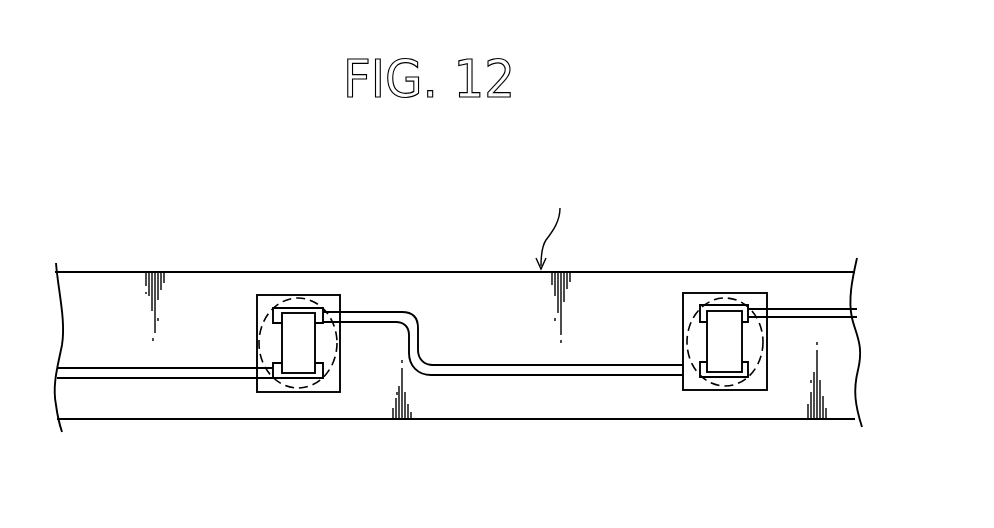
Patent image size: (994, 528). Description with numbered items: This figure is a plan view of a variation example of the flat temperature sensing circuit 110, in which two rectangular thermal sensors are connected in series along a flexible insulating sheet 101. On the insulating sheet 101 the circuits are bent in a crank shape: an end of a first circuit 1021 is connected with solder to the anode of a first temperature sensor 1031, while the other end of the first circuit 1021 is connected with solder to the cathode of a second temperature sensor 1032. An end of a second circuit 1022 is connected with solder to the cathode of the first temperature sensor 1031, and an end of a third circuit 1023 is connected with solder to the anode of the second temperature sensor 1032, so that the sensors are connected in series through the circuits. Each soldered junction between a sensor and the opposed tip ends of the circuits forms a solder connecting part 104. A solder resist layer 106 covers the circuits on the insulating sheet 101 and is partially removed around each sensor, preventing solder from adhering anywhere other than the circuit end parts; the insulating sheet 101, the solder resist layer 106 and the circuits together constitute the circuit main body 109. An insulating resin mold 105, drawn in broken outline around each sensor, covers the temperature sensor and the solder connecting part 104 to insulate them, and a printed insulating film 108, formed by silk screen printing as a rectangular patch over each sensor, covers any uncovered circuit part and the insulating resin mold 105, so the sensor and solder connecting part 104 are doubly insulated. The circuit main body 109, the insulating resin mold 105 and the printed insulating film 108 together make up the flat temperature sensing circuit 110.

The flat temperature sensing circuit 110 is at (677, 148).
The insulating sheet 101 is at (587, 271).
The solder resist layer 106 is at (493, 287).
The circuit main body 109 is at (557, 224).
The first circuit 1021 is at (397, 312).
The second circuit 1022 is at (158, 373).
The third circuit 1023 is at (820, 312).
The printed insulating film 108 is at (698, 293).
The insulating resin mold 105 is at (267, 323).
The solder connecting part 104 is at (288, 300).
The first temperature sensor 1031 is at (303, 325).
The second temperature sensor 1032 is at (730, 322).